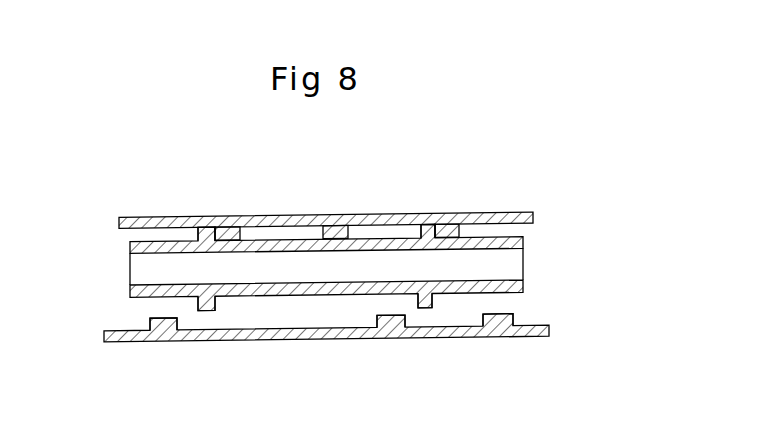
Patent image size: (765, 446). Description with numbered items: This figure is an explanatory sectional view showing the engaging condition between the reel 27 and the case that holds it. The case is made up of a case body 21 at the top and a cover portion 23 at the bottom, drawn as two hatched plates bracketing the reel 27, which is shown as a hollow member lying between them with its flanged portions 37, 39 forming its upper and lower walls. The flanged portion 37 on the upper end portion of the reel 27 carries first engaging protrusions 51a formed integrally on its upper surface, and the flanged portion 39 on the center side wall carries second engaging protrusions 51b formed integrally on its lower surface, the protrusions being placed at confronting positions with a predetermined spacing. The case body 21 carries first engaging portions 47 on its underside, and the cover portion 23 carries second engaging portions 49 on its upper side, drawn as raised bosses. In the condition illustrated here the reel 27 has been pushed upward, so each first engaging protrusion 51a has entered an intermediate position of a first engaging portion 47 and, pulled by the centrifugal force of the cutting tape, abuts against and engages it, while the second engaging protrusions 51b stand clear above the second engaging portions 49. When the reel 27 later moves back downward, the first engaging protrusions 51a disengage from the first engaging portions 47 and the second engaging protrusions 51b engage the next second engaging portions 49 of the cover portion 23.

The case body 21 is at (358, 226).
The cover portion 23 is at (358, 331).
The reel 27 is at (130, 272).
The flanged portion 37 is at (521, 242).
The flanged portion 39 is at (523, 290).
The first engaging portion 47 is at (230, 237).
The second engaging portion 49 is at (168, 331).
The first engaging protrusion 51a is at (208, 237).
The second engaging protrusion 51b is at (207, 313).